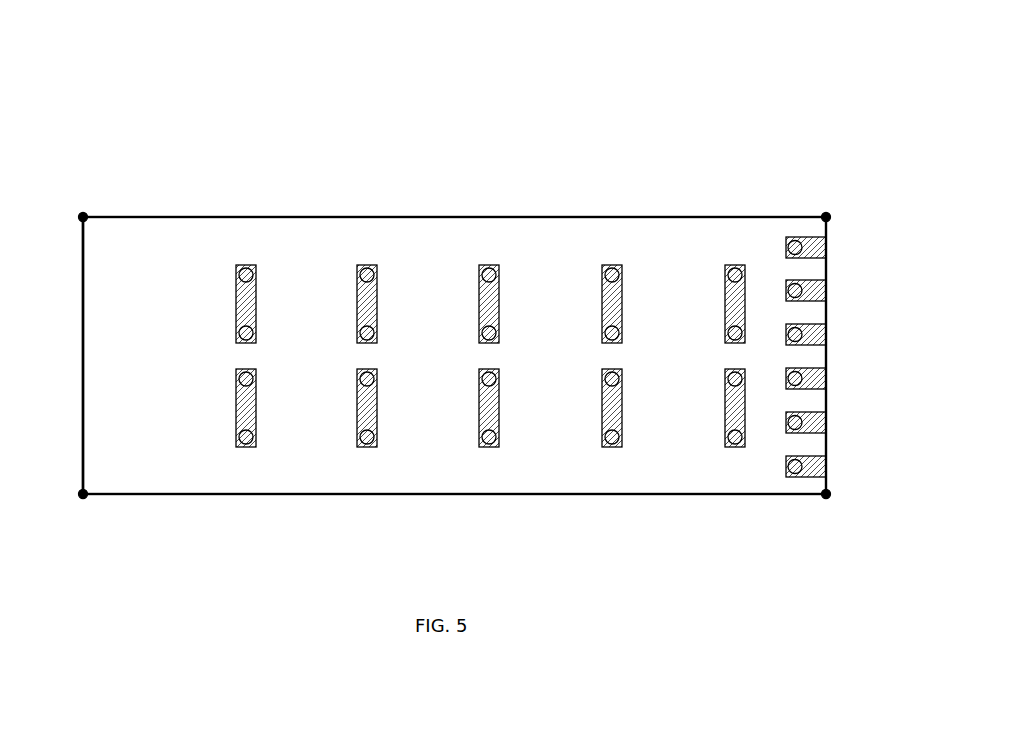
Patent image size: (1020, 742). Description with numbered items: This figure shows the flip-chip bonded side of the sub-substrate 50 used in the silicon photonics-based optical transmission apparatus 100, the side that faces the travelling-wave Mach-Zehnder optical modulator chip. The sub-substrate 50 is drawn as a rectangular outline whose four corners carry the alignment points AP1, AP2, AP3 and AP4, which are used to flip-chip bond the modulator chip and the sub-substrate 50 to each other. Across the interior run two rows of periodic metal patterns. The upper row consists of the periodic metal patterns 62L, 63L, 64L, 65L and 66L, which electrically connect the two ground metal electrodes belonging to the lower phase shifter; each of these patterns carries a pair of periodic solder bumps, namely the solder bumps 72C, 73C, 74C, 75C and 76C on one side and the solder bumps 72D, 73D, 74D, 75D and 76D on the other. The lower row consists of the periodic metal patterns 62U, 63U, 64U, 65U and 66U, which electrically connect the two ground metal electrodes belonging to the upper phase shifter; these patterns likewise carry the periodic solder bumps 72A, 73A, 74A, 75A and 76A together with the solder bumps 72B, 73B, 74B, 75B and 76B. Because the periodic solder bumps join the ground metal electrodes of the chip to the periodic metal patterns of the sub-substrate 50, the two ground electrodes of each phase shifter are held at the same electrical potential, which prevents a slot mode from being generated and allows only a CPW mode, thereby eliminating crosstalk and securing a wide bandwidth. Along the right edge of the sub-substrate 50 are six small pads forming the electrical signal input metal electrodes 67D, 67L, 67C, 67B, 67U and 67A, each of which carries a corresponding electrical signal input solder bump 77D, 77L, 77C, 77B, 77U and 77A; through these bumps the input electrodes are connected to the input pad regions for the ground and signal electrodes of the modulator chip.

The silicon photonics-based optical transmission apparatus 100 is at (812, 78).
The sub-substrate 50 is at (83, 356).
The alignment point AP1 is at (84, 510).
The alignment point AP2 is at (84, 206).
The alignment point AP3 is at (825, 206).
The alignment point AP4 is at (825, 510).
The periodic metal pattern 62L is at (245, 297).
The periodic metal pattern 62U is at (244, 408).
The periodic metal pattern 63L is at (366, 297).
The periodic metal pattern 63U is at (365, 408).
The periodic metal pattern 64L is at (488, 297).
The periodic metal pattern 64U is at (487, 408).
The periodic metal pattern 65L is at (611, 297).
The periodic metal pattern 65U is at (610, 408).
The periodic metal pattern 66L is at (734, 297).
The periodic metal pattern 66U is at (733, 408).
The periodic solder bump 72A is at (249, 447).
The periodic solder bump 72B is at (237, 395).
The periodic solder bump 72C is at (235, 315).
The periodic solder bump 72D is at (248, 267).
The periodic solder bump 73A is at (370, 447).
The periodic solder bump 73B is at (358, 395).
The periodic solder bump 73C is at (356, 315).
The periodic solder bump 73D is at (369, 267).
The periodic solder bump 74A is at (492, 447).
The periodic solder bump 74B is at (480, 395).
The periodic solder bump 74C is at (478, 315).
The periodic solder bump 74D is at (491, 267).
The periodic solder bump 75A is at (615, 447).
The periodic solder bump 75B is at (603, 395).
The periodic solder bump 75C is at (601, 315).
The periodic solder bump 75D is at (614, 267).
The periodic solder bump 76A is at (738, 447).
The periodic solder bump 76B is at (726, 395).
The periodic solder bump 76C is at (724, 315).
The periodic solder bump 76D is at (737, 267).
The electrical signal input solder bump 77A is at (803, 462).
The electrical signal input solder bump 77B is at (803, 374).
The electrical signal input solder bump 77C is at (803, 330).
The electrical signal input solder bump 77D is at (803, 243).
The electrical signal input solder bump 77L is at (803, 286).
The electrical signal input solder bump 77U is at (803, 418).
The electrical signal input metal electrode 67A is at (802, 466).
The electrical signal input metal electrode 67B is at (802, 378).
The electrical signal input metal electrode 67C is at (802, 334).
The electrical signal input metal electrode 67D is at (802, 247).
The electrical signal input metal electrode 67L is at (802, 290).
The electrical signal input metal electrode 67U is at (802, 422).